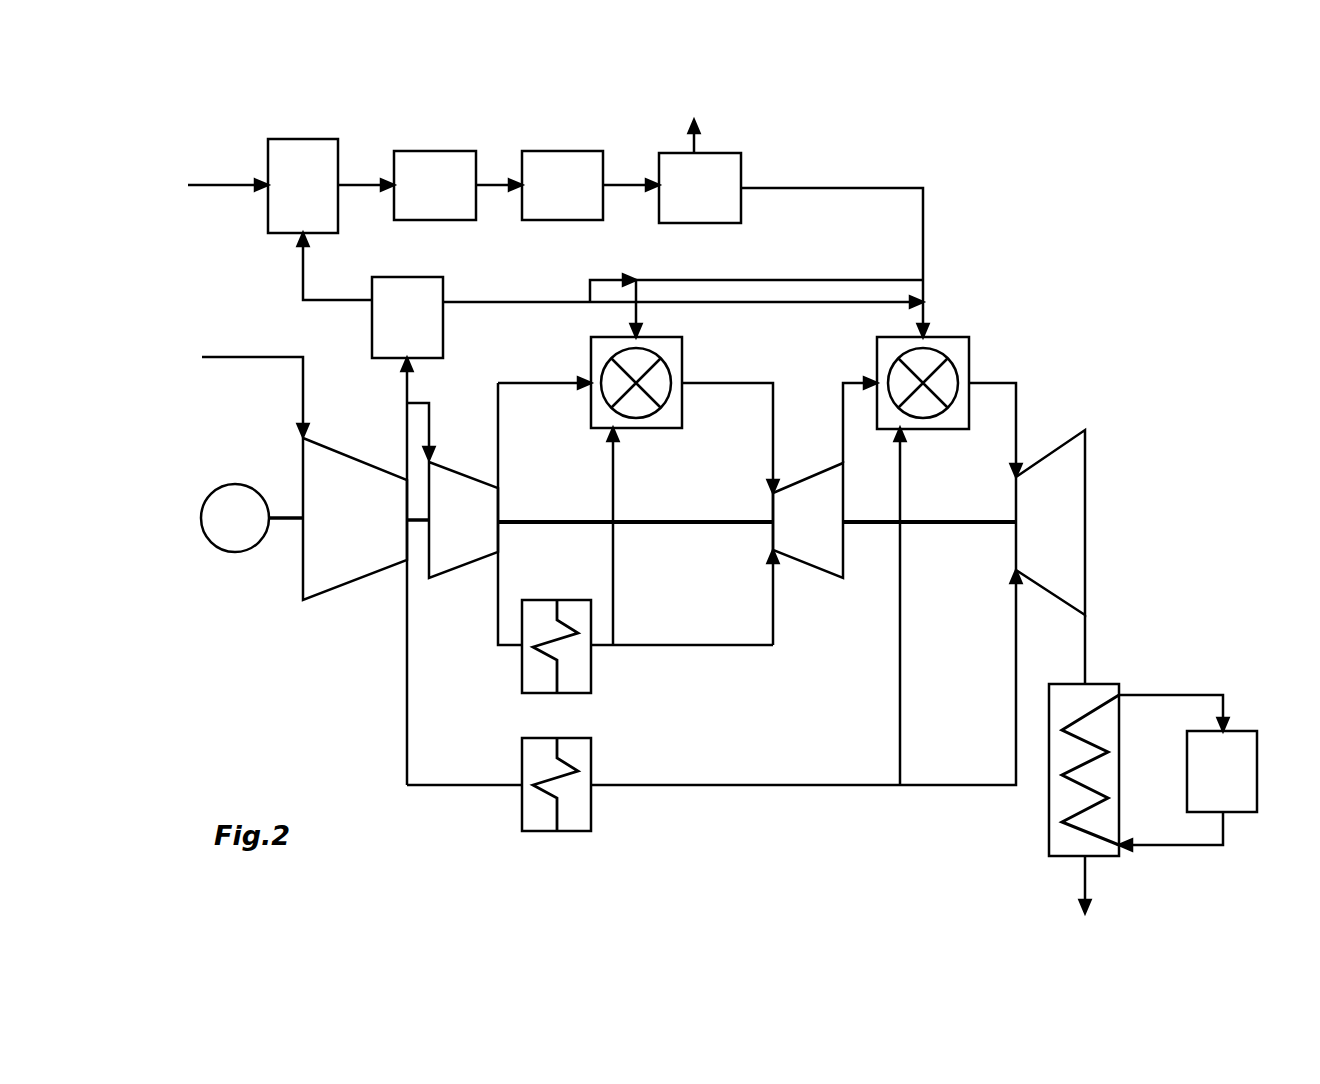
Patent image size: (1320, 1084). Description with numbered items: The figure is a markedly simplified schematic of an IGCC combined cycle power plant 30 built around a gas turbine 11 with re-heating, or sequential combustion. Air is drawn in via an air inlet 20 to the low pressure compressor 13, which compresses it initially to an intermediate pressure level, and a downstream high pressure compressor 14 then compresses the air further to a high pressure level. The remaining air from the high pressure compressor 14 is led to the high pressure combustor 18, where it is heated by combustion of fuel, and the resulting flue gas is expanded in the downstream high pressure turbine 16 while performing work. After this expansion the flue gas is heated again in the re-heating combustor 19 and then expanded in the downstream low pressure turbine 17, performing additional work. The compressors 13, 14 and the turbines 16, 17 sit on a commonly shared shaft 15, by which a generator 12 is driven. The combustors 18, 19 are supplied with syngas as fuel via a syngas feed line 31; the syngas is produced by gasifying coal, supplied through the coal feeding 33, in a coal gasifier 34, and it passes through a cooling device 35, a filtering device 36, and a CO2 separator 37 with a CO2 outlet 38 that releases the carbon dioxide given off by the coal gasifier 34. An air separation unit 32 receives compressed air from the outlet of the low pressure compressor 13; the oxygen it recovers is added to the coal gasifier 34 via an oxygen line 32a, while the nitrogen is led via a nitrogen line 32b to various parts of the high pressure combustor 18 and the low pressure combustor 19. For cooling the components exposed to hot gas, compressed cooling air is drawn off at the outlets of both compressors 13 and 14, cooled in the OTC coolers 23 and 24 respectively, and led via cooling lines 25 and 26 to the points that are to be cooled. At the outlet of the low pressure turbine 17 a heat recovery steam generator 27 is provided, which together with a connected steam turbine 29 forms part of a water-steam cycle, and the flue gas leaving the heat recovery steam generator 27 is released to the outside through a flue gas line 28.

The gas turbine 11 is at (1118, 537).
The generator 12 is at (222, 530).
The low pressure compressor 13 is at (327, 577).
The high pressure compressor 14 is at (452, 553).
The shaft 15 is at (923, 527).
The high pressure turbine 16 is at (808, 557).
The low pressure turbine 17 is at (1060, 478).
The high pressure combustor 18 is at (660, 418).
The re-heating combustor 19 is at (935, 420).
The air inlet 20 is at (220, 358).
The OTC cooler 23 is at (533, 818).
The OTC cooler 24 is at (578, 668).
The cooling line 25 is at (693, 650).
The cooling line 26 is at (797, 787).
The heat recovery steam generator 27 is at (1048, 833).
The flue gas line 28 is at (1087, 878).
The steam turbine 29 is at (1245, 800).
The combined cycle power plant 30 is at (678, 567).
The syngas feed line 31 is at (927, 223).
The air separation unit 32 is at (430, 325).
The oxygen line 32a is at (300, 280).
The nitrogen line 32b is at (500, 298).
The coal feeding 33 is at (210, 180).
The coal gasifier 34 is at (280, 207).
The cooling device 35 is at (417, 173).
The filtering device 36 is at (555, 163).
The CO2 separator 37 is at (728, 210).
The CO2 outlet 38 is at (700, 140).